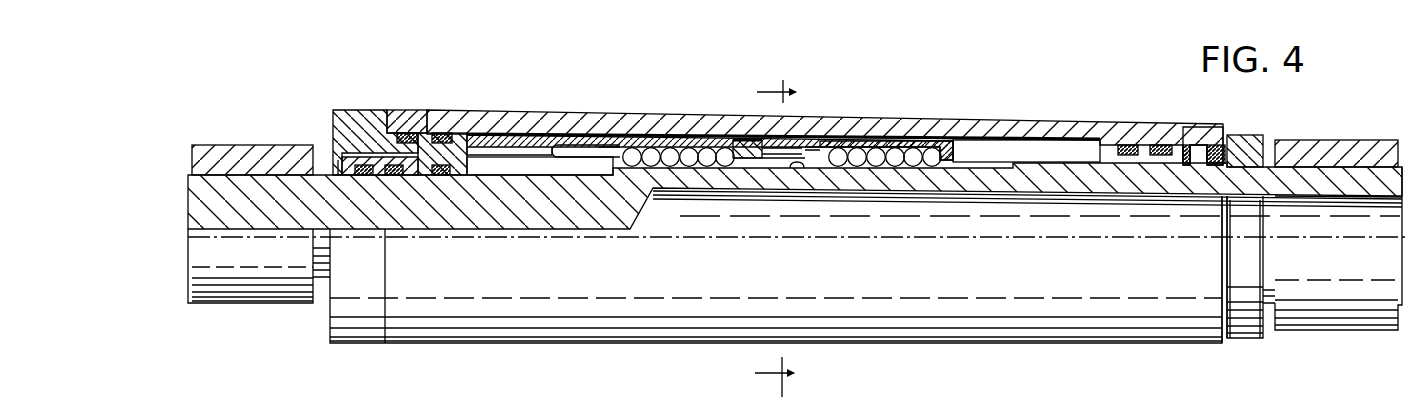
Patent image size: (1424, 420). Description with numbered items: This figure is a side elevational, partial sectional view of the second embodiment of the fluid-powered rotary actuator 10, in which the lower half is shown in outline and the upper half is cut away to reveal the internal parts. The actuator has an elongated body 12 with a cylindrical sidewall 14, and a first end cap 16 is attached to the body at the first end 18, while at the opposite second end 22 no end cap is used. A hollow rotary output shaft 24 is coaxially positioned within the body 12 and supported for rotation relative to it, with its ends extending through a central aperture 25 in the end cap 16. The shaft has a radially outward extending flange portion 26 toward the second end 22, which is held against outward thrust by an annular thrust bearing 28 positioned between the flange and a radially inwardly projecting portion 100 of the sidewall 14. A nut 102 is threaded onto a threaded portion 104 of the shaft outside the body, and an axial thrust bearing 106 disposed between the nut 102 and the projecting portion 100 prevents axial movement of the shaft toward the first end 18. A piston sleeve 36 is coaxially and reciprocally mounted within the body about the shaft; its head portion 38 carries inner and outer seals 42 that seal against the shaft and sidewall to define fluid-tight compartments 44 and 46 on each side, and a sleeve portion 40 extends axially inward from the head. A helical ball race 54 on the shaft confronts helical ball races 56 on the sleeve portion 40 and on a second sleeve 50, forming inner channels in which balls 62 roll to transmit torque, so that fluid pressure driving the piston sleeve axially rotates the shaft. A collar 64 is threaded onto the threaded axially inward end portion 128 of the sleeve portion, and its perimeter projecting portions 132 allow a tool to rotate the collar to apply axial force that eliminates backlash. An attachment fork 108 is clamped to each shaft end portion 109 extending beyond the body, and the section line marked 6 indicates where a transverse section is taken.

The fluid-powered rotary actuator 10 is at (597, 78).
The body 12 is at (1033, 122).
The cylindrical sidewall 14 is at (968, 125).
The first end cap 16 is at (357, 115).
The first end 18 is at (398, 118).
The second end 22 is at (1215, 130).
The rotary output shaft 24 is at (555, 215).
The central aperture 25 is at (338, 163).
The flange portion 26 is at (1170, 148).
The thrust bearing 28 is at (1182, 146).
The piston sleeve 36 is at (505, 137).
The head portion 38 is at (457, 150).
The sleeve portion 40 is at (568, 140).
The inner and outer seals 42 is at (447, 140).
The fluid-tight compartment 44 is at (427, 140).
The fluid-tight compartment 46 is at (487, 165).
The sleeve 50 is at (920, 143).
The helical ball race 54 is at (797, 166).
The helical ball races 56 is at (598, 145).
The balls 62 is at (671, 148).
The collar 64 is at (738, 160).
The radially inwardly projecting portion 100 is at (1195, 145).
The nut 102 is at (1253, 137).
The threaded portion 104 is at (1248, 168).
The axial thrust bearing 106 is at (1225, 167).
The attachment fork 108 is at (233, 150).
The shaft end portion 109 is at (1337, 180).
The threaded axially inward end portion 128 is at (733, 150).
The projecting portions 132 is at (762, 150).
The section line 6- 6 is at (778, 235).